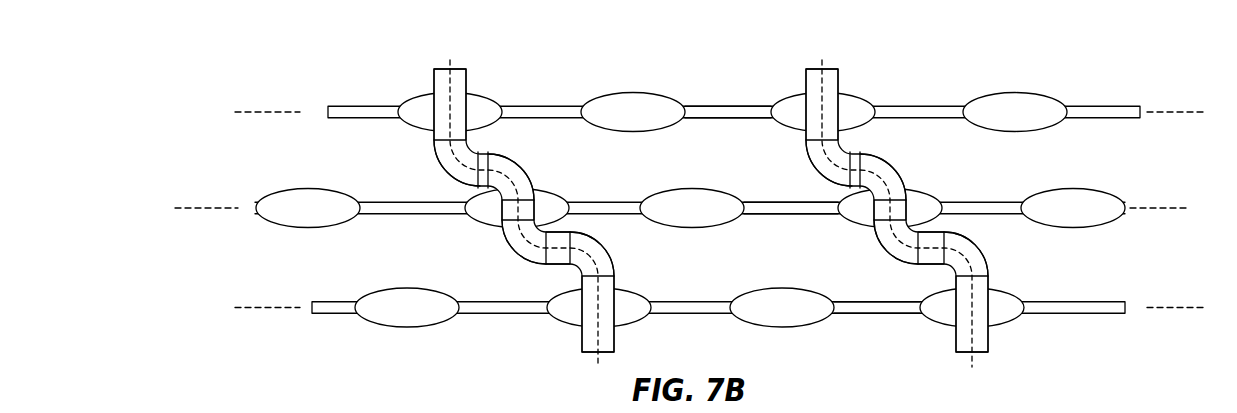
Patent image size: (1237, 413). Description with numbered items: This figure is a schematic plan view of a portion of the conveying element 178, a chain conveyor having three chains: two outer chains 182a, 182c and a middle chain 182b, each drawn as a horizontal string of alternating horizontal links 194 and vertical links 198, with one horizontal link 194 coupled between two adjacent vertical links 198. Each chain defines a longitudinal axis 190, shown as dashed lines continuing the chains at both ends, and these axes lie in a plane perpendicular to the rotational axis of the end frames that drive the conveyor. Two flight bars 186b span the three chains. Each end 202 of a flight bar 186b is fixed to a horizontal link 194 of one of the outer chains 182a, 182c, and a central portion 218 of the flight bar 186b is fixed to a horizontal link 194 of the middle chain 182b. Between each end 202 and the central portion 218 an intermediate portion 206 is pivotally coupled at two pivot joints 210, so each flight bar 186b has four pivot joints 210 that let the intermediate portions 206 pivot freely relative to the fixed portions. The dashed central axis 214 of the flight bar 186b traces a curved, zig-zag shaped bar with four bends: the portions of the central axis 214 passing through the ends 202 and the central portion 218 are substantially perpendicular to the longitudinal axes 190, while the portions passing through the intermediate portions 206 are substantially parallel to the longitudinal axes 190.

The conveying element 178 is at (693, 188).
The first chain 182a is at (1083, 95).
The second chain 182b is at (1108, 183).
The outer chain 182c is at (1120, 290).
The flight bar 186b is at (427, 50).
The longitudinal axis 190 is at (265, 112).
The horizontal link 194 is at (485, 105).
The vertical link 198 is at (718, 112).
The end 202 is at (434, 79).
The intermediate portion 206 is at (489, 156).
The pivot joint 210 is at (435, 148).
The central axis 214 is at (452, 60).
The central portion 218 is at (540, 212).